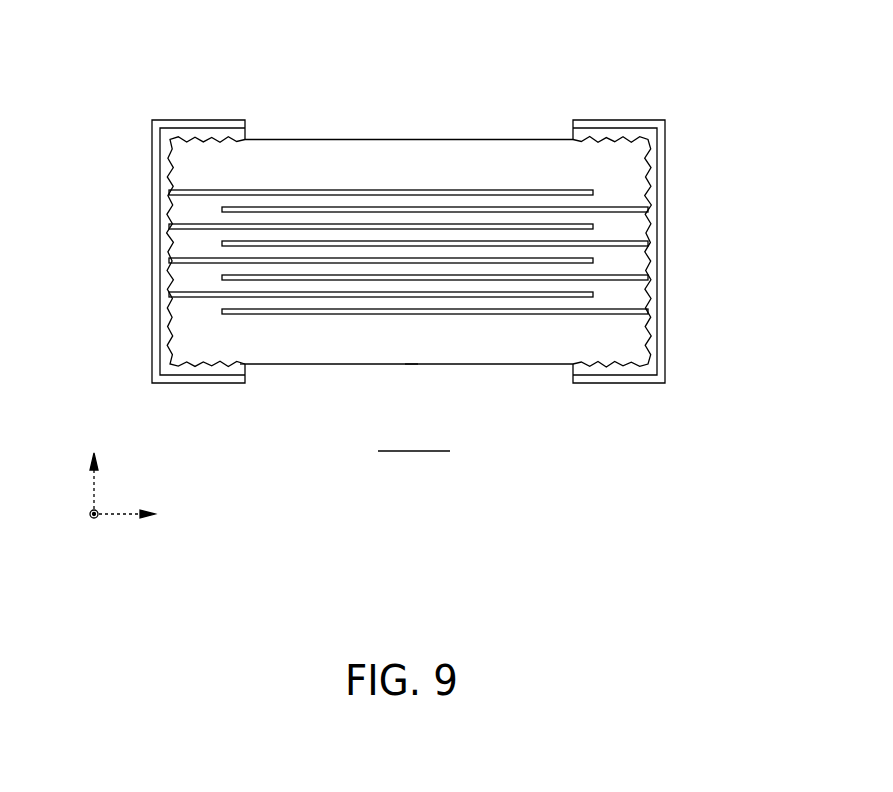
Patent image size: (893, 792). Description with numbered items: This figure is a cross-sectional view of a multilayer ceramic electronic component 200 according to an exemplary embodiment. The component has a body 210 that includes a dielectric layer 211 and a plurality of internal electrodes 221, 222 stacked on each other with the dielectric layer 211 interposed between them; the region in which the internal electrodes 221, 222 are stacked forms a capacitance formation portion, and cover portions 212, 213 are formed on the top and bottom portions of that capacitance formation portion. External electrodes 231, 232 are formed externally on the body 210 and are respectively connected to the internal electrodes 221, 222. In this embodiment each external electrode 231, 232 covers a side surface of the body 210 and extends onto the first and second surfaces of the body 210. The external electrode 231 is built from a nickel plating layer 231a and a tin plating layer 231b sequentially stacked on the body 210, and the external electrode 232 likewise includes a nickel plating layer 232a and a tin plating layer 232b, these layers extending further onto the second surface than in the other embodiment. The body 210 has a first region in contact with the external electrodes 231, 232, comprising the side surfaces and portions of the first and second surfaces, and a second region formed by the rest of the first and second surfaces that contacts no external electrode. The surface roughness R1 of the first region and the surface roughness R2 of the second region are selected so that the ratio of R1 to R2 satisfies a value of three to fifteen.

The multilayer ceramic electronic component 200 is at (147, 36).
The body 210 is at (462, 139).
The dielectric layer 211 is at (263, 205).
The cover portion 212 is at (512, 163).
The cover portion 213 is at (509, 352).
The internal electrode 221 is at (333, 195).
The internal electrode 222 is at (393, 207).
The external electrode 231 is at (62, 213).
The nickel plating layer 231a is at (168, 262).
The tin plating layer 231b is at (157, 227).
The external electrode 232 is at (757, 218).
The nickel plating layer 232a is at (648, 262).
The tin plating layer 232b is at (657, 227).
The surface roughness of the first region R1 is at (240, 363).
The surface roughness of the second region R2 is at (411, 365).